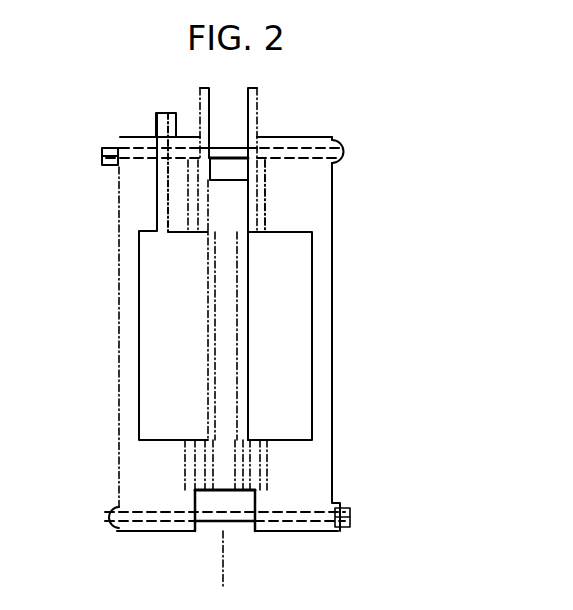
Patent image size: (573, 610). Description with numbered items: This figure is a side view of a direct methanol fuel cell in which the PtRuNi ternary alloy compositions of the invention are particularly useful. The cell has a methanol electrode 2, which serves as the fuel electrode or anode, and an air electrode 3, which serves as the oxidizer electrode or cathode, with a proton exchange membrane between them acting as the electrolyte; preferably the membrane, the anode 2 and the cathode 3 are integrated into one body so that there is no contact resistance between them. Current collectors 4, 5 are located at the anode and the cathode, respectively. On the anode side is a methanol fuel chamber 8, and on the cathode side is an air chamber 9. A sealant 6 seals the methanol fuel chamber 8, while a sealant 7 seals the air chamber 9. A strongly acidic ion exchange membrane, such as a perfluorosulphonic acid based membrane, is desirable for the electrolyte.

The methanol electrode 2 is at (200, 531).
The air electrode 3 is at (245, 531).
The current collector 4 is at (200, 96).
The current collector 5 is at (258, 103).
The sealant 6 is at (187, 542).
The sealant 7 is at (268, 191).
The methanol fuel chamber 8 is at (120, 203).
The air chamber 9 is at (331, 330).